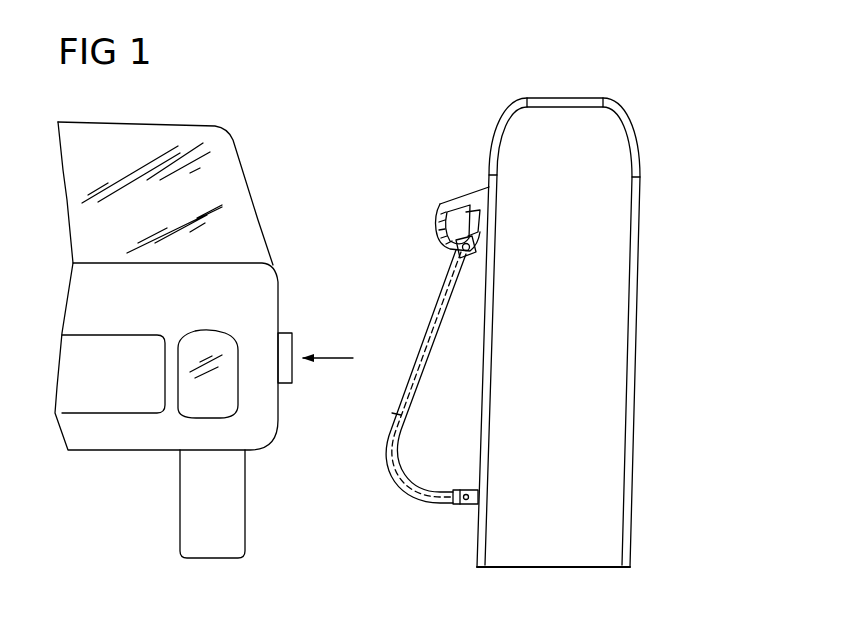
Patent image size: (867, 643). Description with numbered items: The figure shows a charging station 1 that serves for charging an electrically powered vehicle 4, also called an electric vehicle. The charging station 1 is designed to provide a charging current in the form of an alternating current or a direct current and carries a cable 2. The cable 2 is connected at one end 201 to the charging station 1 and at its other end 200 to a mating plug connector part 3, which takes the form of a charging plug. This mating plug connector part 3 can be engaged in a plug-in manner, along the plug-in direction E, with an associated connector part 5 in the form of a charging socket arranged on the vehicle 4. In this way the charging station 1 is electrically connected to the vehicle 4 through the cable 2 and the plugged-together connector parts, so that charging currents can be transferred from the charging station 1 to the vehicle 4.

The charging station 1 is at (650, 112).
The cable 2 is at (402, 496).
The mating plug connector part 3 is at (455, 180).
The electrically powered vehicle 4 is at (240, 115).
The connector part 5 is at (281, 362).
The end 200 is at (444, 256).
The end 201 is at (455, 508).
The plug-in direction E is at (328, 349).